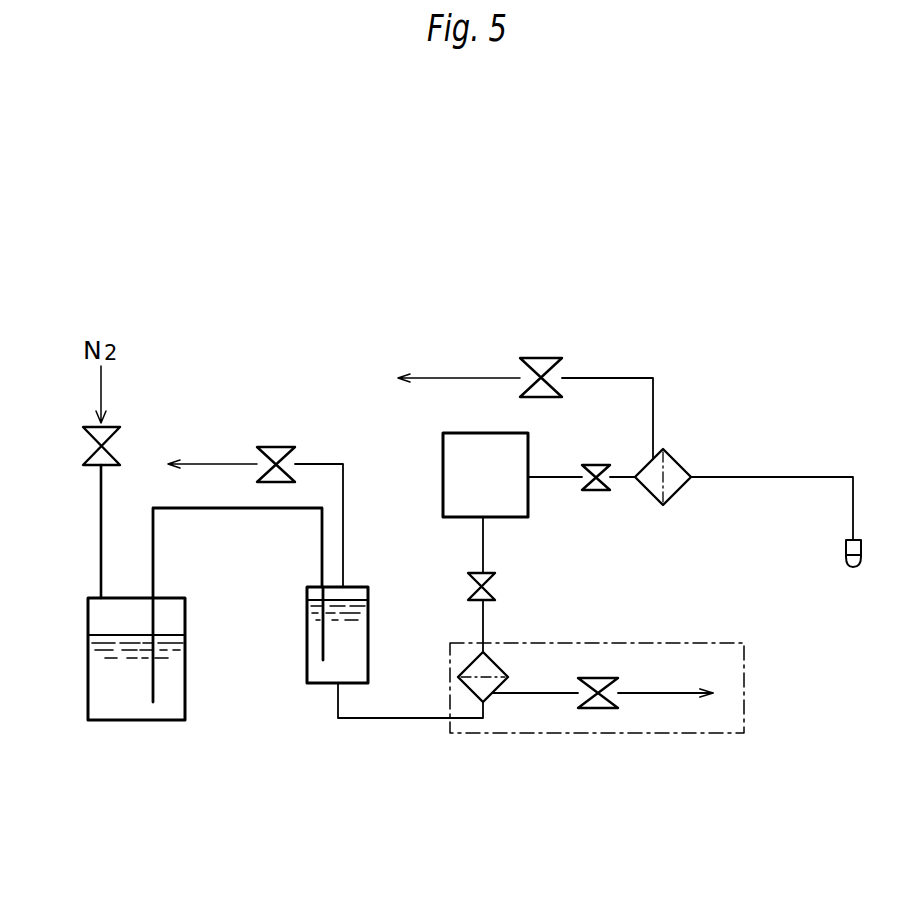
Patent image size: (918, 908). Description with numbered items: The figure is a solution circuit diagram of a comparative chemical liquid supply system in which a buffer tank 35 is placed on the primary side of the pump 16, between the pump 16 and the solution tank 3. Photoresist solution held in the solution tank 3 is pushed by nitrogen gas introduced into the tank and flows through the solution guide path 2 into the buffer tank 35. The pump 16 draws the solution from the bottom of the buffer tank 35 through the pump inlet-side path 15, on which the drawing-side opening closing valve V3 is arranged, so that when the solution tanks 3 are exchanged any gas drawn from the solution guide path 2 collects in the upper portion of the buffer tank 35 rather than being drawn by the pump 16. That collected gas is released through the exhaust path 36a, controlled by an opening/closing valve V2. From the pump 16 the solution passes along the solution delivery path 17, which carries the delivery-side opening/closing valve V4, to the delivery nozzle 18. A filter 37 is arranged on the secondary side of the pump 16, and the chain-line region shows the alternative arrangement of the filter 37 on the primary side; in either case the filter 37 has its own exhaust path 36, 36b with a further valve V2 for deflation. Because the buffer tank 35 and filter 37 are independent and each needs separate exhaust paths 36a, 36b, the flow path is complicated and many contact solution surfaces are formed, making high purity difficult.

The solution guide path 2 is at (247, 508).
The solution tank 3 is at (93, 688).
The pump inlet-side path 15 is at (397, 720).
The pump 16 is at (522, 503).
The solution delivery path 17 is at (753, 478).
The delivery nozzle 18 is at (846, 555).
The buffer tank 35 is at (368, 613).
The exhaust path 36 is at (653, 390).
The exhaust path 36a is at (343, 495).
The exhaust path 36b is at (553, 695).
The filter 37 is at (677, 458).
The opening/closing valve V2 is at (290, 450).
The drawing-side opening closing valve V3 is at (495, 589).
The delivery-side opening/closing valve V4 is at (590, 470).